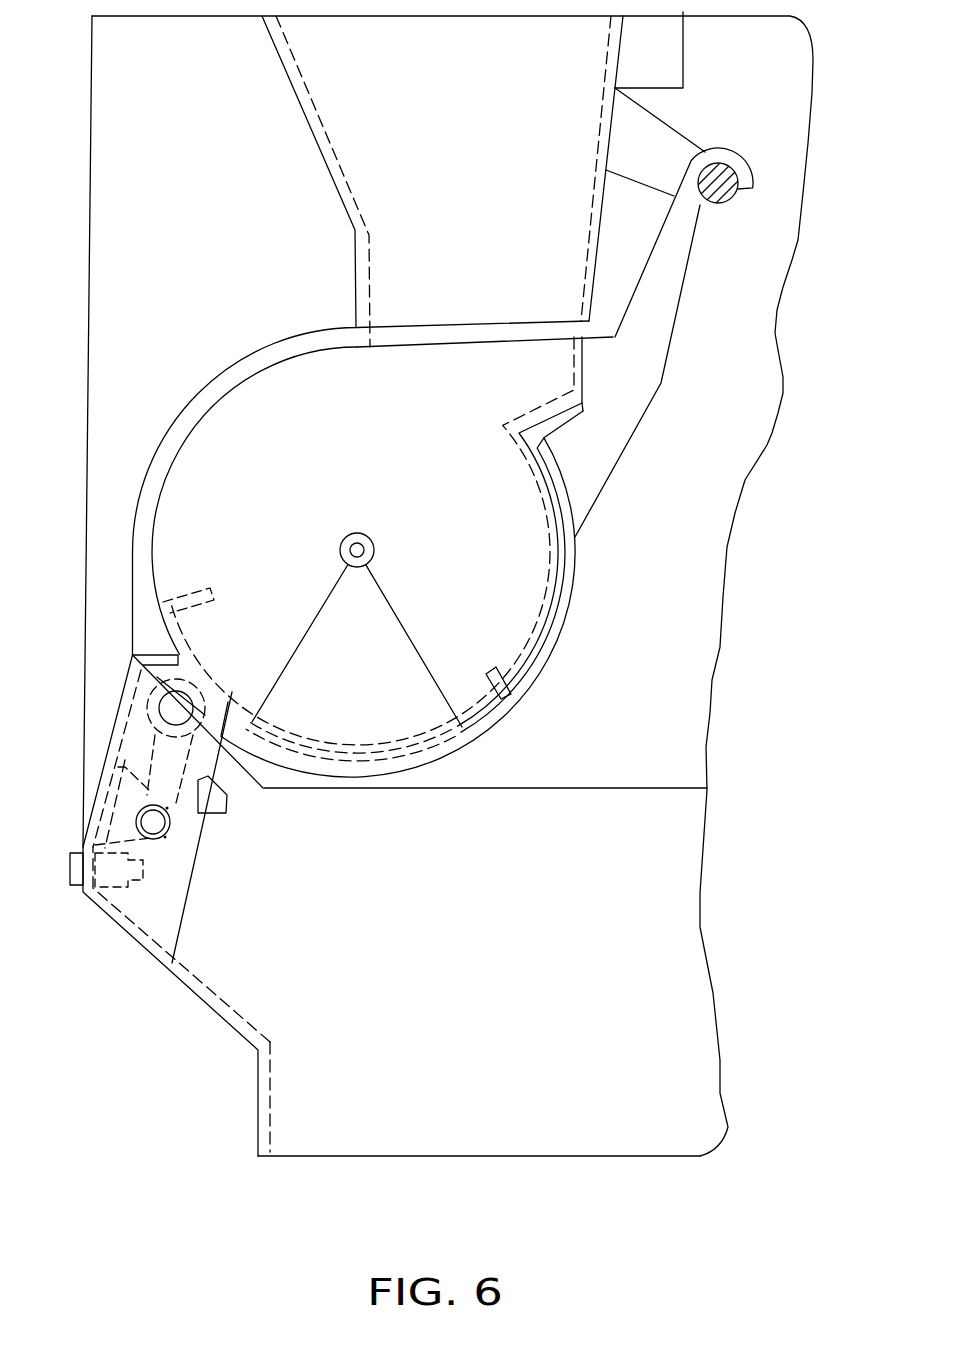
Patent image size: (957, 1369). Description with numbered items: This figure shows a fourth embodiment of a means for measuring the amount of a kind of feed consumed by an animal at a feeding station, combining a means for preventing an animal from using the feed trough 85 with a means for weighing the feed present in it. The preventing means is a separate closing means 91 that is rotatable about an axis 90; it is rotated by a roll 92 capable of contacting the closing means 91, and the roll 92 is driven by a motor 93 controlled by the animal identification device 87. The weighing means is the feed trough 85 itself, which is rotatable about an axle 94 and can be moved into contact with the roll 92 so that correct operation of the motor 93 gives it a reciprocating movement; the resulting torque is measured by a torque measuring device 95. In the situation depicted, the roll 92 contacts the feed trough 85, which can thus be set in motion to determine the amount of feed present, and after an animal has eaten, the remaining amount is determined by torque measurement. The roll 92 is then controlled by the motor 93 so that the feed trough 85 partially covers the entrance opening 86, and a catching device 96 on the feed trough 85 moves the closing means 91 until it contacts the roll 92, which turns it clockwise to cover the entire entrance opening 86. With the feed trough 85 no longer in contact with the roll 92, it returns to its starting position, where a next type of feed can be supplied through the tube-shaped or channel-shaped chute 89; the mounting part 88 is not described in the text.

The feed trough 85 is at (538, 665).
The entrance opening 86 is at (235, 380).
The animal identification device 87 is at (148, 907).
The mounting bracket 88 is at (655, 50).
The chute 89 is at (353, 135).
The axis 90 is at (373, 548).
The closing means 91 is at (378, 690).
The roll 92 is at (205, 715).
The motor 93 is at (168, 847).
The axle 94 is at (722, 197).
The torque measuring device 95 is at (208, 797).
The catching device 96 is at (492, 675).